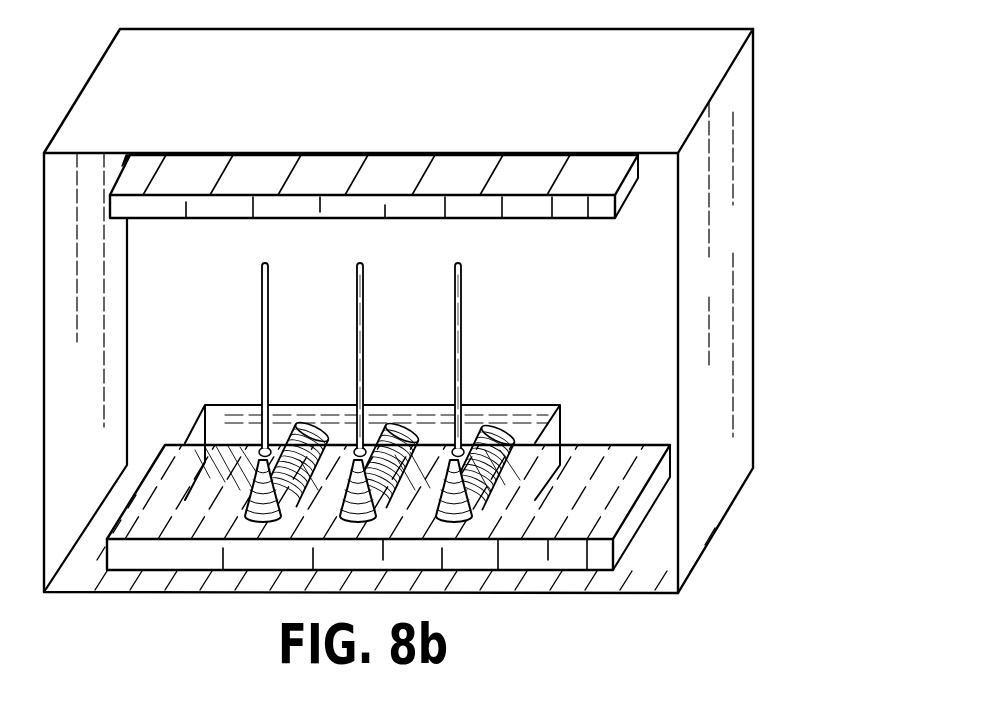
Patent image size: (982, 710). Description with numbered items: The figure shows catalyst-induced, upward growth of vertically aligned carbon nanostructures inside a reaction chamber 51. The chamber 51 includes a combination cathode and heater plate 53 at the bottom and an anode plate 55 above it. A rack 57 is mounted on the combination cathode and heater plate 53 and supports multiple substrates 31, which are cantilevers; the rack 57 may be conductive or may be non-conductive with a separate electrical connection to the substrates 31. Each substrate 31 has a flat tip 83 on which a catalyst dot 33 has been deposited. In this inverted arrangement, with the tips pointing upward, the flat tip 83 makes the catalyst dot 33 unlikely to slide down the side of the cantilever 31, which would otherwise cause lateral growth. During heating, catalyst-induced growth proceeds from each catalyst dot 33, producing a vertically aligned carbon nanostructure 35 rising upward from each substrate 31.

The reaction chamber 51 is at (753, 58).
The anode plate 55 is at (635, 181).
The combination cathode and heater plate 53 is at (633, 520).
The rack 57 is at (552, 443).
The carbon nanostructures 35 is at (262, 288).
The catalyst dot 33 is at (262, 448).
The flat tip 83 is at (298, 430).
The substrate 31 is at (258, 482).